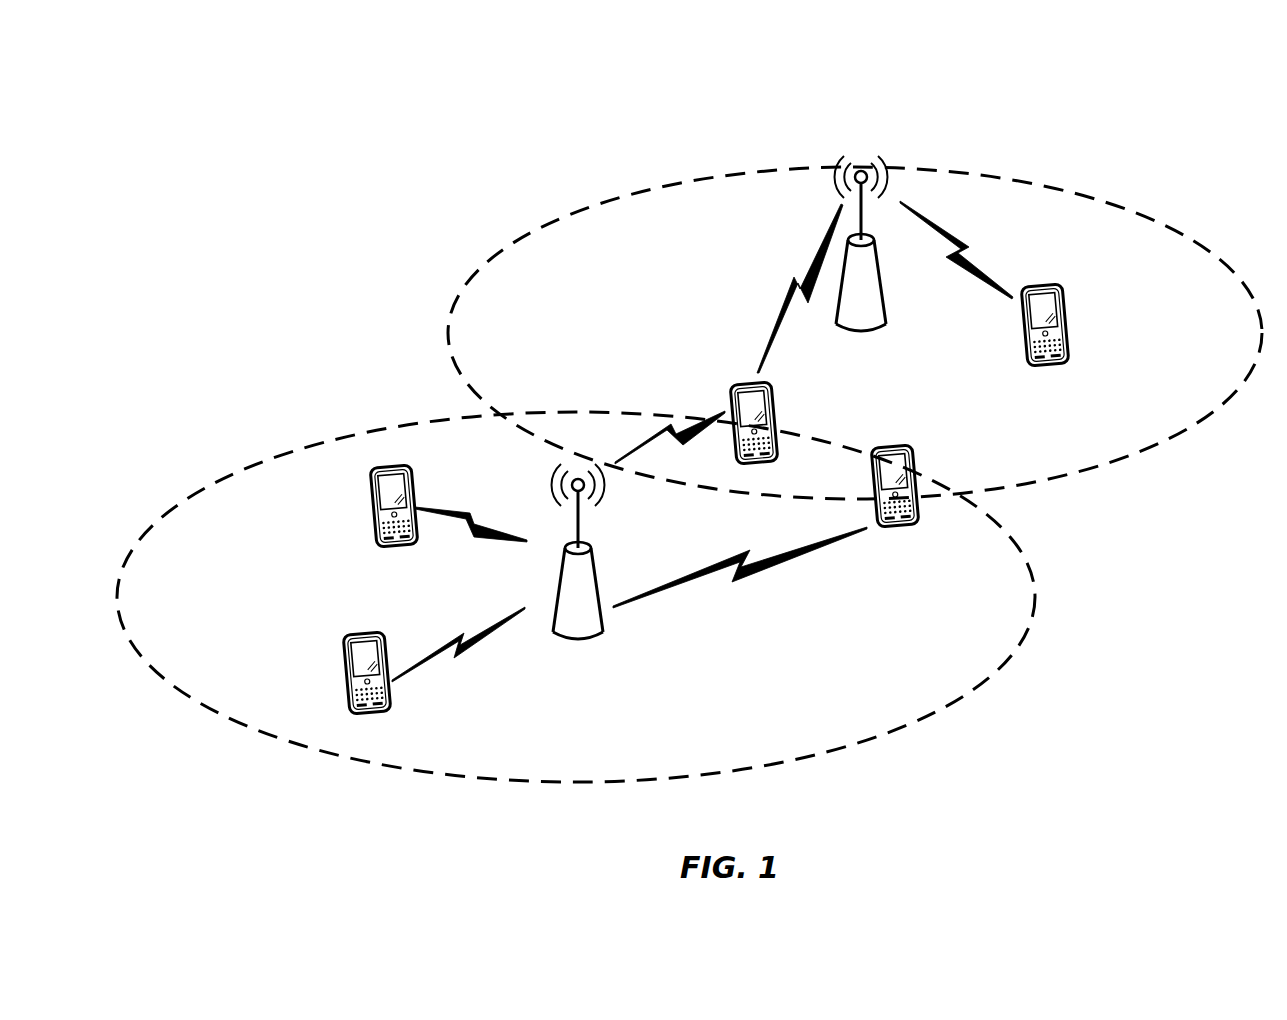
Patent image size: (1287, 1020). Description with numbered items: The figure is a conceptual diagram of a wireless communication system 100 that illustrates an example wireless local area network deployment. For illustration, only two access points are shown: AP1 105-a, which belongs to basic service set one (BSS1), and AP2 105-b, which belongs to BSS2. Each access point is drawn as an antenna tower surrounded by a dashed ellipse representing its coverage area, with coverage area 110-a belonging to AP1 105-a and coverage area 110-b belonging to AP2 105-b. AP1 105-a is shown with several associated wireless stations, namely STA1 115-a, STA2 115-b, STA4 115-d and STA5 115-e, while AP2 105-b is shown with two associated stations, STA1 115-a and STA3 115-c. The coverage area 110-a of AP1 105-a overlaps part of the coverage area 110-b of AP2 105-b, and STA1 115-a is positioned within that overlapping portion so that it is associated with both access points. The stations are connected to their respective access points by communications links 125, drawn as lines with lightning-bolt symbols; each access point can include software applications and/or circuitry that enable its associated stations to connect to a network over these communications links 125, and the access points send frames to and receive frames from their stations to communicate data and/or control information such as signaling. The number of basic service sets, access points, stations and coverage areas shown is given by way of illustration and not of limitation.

The wireless communication system 100 is at (124, 82).
The coverage area 110-a is at (196, 491).
The coverage area 110-b is at (986, 176).
The AP1 105-a is at (582, 641).
The AP2 105-b is at (880, 350).
The STA1 115-a is at (733, 396).
The STA2 115-b is at (347, 644).
The STA3 115-c is at (1063, 296).
The STA4 115-d is at (917, 458).
The STA5 115-e is at (373, 477).
The communications links 125 is at (750, 552).